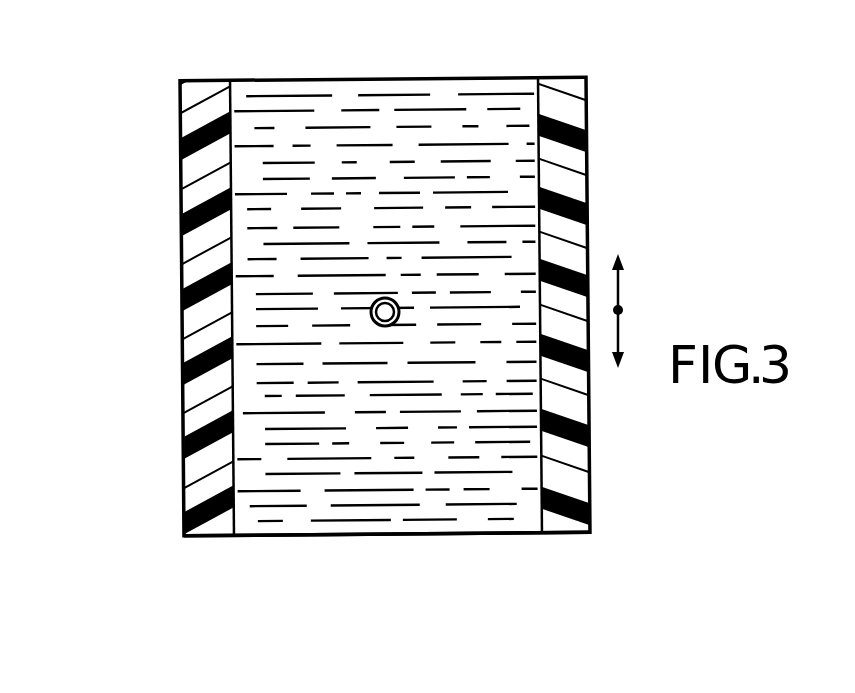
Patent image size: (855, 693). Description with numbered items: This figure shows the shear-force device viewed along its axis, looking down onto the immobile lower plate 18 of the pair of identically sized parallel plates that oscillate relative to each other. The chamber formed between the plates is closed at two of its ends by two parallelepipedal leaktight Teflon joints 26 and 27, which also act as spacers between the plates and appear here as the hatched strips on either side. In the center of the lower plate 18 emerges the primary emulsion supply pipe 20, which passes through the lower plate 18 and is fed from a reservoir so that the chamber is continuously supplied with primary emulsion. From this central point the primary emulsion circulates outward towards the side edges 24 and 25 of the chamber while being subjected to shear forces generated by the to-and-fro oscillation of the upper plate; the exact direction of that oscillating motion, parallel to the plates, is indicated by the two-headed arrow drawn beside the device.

The lower plate 18 is at (278, 95).
The primary emulsion supply pipe 20 is at (370, 313).
The side edge of the chamber 24 is at (440, 79).
The side edge of the chamber 25 is at (345, 537).
The leaktight Teflon joint 26 is at (193, 197).
The leaktight Teflon joint 27 is at (578, 196).